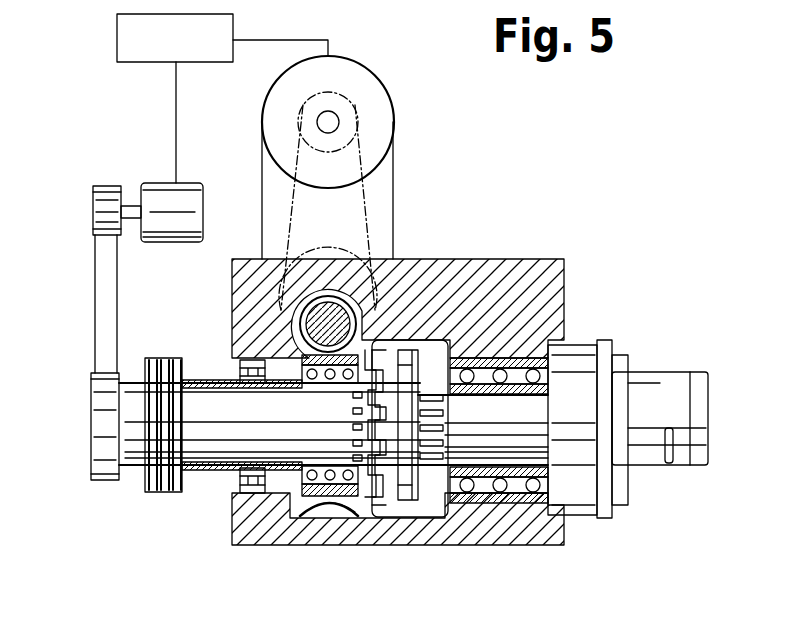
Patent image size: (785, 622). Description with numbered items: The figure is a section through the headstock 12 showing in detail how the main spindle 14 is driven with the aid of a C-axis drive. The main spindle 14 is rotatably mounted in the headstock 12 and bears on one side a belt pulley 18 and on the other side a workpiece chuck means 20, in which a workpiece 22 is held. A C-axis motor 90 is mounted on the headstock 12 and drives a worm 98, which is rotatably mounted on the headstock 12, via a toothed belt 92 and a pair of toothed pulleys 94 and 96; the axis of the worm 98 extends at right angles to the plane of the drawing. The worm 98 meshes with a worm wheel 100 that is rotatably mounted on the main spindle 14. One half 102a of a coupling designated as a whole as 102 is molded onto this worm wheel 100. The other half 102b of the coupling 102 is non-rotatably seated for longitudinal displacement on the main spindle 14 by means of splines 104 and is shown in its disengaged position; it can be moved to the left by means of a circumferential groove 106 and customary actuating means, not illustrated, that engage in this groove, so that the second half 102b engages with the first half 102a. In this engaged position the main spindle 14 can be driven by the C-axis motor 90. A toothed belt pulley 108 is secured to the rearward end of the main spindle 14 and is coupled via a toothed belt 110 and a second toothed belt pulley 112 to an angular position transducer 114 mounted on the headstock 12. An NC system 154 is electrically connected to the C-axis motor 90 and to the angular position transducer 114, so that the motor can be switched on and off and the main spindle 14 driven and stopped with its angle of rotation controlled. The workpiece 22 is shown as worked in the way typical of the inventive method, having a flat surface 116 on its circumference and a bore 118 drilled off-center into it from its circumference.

The headstock 12 is at (533, 273).
The main spindle 14 is at (217, 435).
The belt pulley 18 is at (165, 358).
The workpiece chuck means 20 is at (610, 332).
The workpiece 22 is at (690, 387).
The C-axis motor 90 is at (383, 112).
The toothed belt 92 is at (395, 197).
The toothed pulley 94 is at (333, 106).
The toothed pulley 96 is at (417, 287).
The worm 98 is at (303, 316).
The worm wheel 100 is at (327, 507).
The coupling 102 is at (382, 512).
The coupling half 102a is at (365, 507).
The coupling half 102b is at (420, 507).
The splines 104 is at (440, 421).
The circumferential groove 106 is at (458, 287).
The toothed belt pulley 108 is at (97, 410).
The toothed belt 110 is at (96, 310).
The second toothed belt pulley 112 is at (92, 206).
The angular position transducer 114 is at (190, 184).
The flat surface 116 is at (694, 467).
The bore 118 is at (668, 463).
The NC system 154 is at (117, 35).